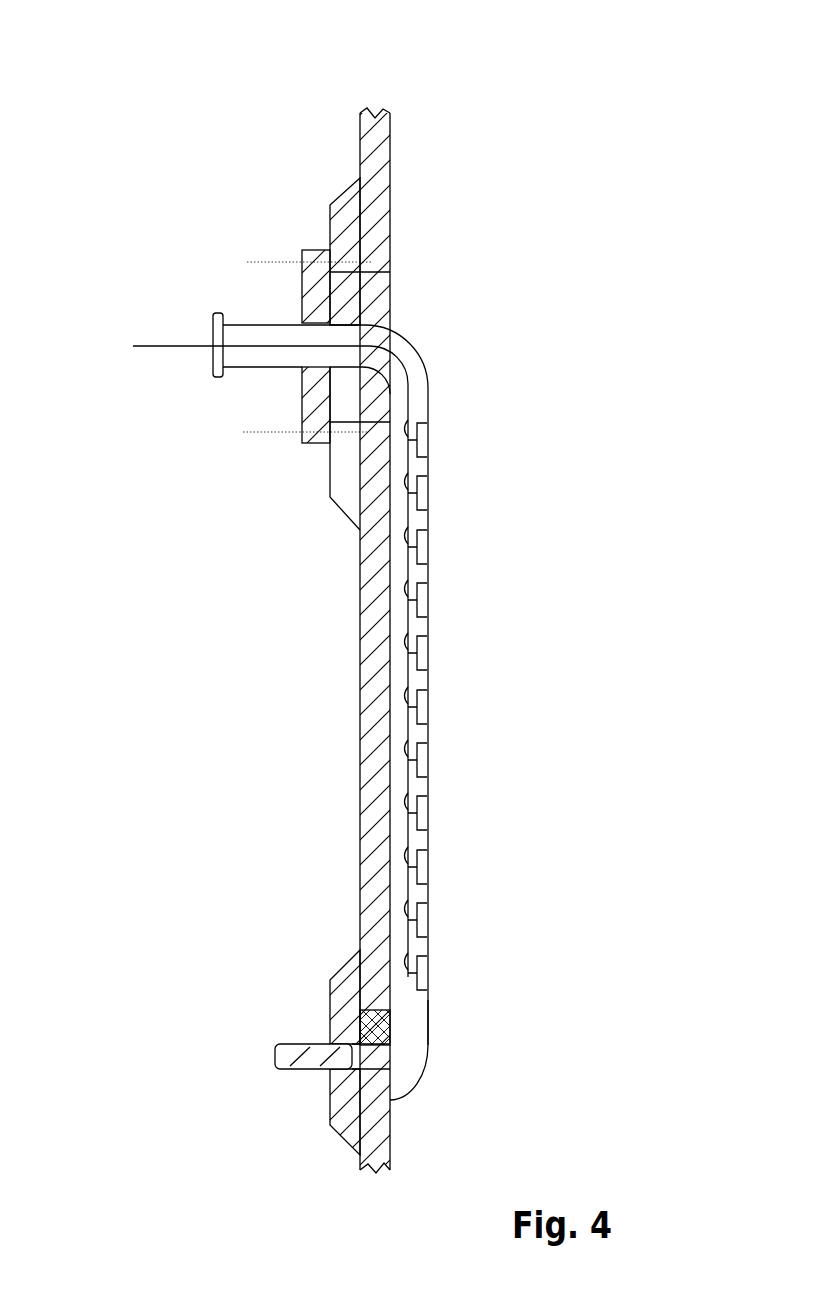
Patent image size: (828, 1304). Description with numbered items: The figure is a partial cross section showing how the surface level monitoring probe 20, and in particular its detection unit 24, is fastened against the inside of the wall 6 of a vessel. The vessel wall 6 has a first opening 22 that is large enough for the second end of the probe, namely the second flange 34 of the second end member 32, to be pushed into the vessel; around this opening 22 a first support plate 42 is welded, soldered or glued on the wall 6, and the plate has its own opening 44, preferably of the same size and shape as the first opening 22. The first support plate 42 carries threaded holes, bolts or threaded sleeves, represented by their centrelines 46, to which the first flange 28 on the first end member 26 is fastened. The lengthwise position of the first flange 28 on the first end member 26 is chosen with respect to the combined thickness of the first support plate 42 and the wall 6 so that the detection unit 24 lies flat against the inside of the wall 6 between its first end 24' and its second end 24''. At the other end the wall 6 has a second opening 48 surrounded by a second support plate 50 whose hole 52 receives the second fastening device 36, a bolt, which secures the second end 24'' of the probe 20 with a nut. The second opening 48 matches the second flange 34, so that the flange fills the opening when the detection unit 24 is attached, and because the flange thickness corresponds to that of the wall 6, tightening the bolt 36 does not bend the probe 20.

The vessel wall 6 is at (378, 136).
The probe 20 is at (490, 253).
The first opening 22 is at (380, 292).
The detection unit 24 is at (390, 668).
The first end of the detection unit 24' is at (503, 289).
The second end of the probe 24'' is at (513, 1085).
The first end member 26 is at (258, 322).
The first flange 28 is at (300, 297).
The second end member 32 is at (412, 1046).
The second flange 34 is at (398, 1015).
The second fastening device 36 is at (297, 1070).
The first support plate 42 is at (332, 200).
The opening of the first support plate 44 is at (345, 293).
The centrelines 46 is at (263, 432).
The second opening 48 is at (352, 998).
The second support plate 50 is at (378, 1030).
The hole 52 is at (328, 1027).